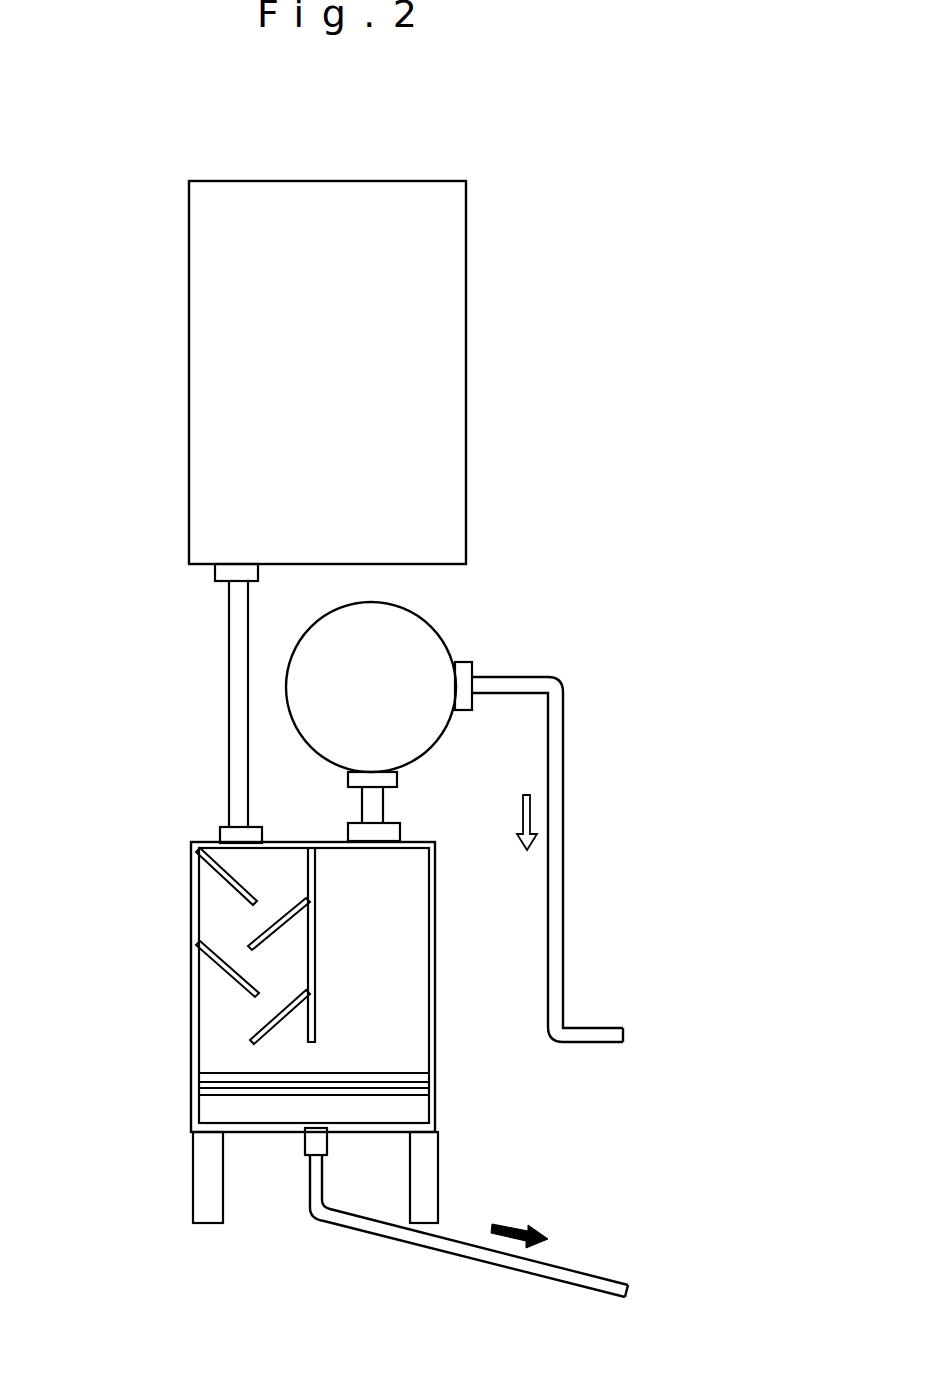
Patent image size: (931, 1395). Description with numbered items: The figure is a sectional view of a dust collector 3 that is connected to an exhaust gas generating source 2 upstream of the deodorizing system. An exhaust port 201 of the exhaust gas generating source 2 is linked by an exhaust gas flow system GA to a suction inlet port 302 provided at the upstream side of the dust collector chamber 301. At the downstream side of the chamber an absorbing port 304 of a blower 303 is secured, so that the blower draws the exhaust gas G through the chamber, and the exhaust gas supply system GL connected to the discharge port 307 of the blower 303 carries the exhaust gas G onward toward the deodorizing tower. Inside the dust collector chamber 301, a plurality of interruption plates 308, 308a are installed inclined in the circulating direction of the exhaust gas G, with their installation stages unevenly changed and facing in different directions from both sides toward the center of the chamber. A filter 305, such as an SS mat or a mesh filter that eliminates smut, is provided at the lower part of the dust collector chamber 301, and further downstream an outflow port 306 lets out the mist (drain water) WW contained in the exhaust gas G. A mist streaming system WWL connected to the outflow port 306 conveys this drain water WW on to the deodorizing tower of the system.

The exhaust gas generating source 2 is at (314, 213).
The exhaust port 201 is at (216, 571).
The exhaust gas flow system GA is at (238, 650).
The suction inlet port 302 is at (220, 828).
The blower 303 is at (398, 638).
The discharge port 307 is at (467, 663).
The absorbing port 304 is at (390, 833).
The exhaust gas supply system GL is at (557, 818).
The exhaust gas G is at (526, 839).
The dust collector 3 is at (254, 1076).
The dust collector chamber 301 is at (213, 900).
The interruption plate 308 is at (207, 870).
The interruption plate 308a is at (263, 940).
The filter 305 is at (200, 1087).
The outflow port 306 is at (313, 1138).
The mist streaming system WWL is at (447, 1242).
The mist (drain water) WW is at (549, 1239).